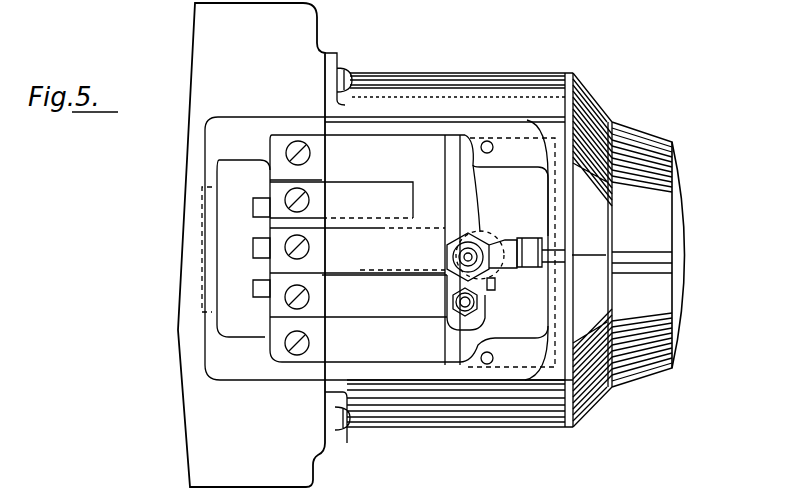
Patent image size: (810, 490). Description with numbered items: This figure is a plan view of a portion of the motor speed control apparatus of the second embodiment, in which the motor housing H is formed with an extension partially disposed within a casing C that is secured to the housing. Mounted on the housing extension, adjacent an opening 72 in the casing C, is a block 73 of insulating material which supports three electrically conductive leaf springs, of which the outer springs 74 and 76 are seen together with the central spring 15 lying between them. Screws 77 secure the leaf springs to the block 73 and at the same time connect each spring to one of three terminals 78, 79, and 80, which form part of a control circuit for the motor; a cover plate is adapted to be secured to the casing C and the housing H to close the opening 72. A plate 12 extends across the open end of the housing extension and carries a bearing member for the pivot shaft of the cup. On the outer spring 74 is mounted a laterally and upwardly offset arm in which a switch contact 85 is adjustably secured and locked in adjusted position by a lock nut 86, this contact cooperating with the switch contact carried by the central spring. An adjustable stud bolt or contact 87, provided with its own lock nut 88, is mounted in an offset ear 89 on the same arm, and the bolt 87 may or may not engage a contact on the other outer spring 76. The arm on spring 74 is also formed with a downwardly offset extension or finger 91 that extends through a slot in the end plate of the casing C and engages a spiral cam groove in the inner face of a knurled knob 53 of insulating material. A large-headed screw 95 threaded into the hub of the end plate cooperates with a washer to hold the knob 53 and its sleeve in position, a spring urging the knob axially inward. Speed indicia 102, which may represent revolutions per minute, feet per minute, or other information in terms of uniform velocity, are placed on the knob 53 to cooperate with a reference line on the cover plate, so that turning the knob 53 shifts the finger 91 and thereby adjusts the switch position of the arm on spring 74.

The motor housing H is at (309, 33).
The casing C is at (443, 83).
The knurled knob 53 is at (672, 128).
The large-headed screw 95 is at (683, 237).
The speed indicia 102 is at (592, 250).
The opening 72 is at (231, 381).
The block 73 is at (303, 348).
The screws 77 is at (306, 157).
The terminal 78 is at (263, 200).
The terminal 79 is at (262, 249).
The terminal 80 is at (262, 288).
The leaf spring 74 is at (336, 196).
The contact bar 15 is at (360, 248).
The leaf spring 76 is at (344, 311).
The plate 12 is at (510, 200).
The switch contact 85 is at (468, 250).
The lock nut 86 is at (446, 259).
The finger 91 is at (533, 241).
The stud bolt 87 is at (450, 299).
The lock nut 88 is at (476, 310).
The offset ear 89 is at (496, 287).